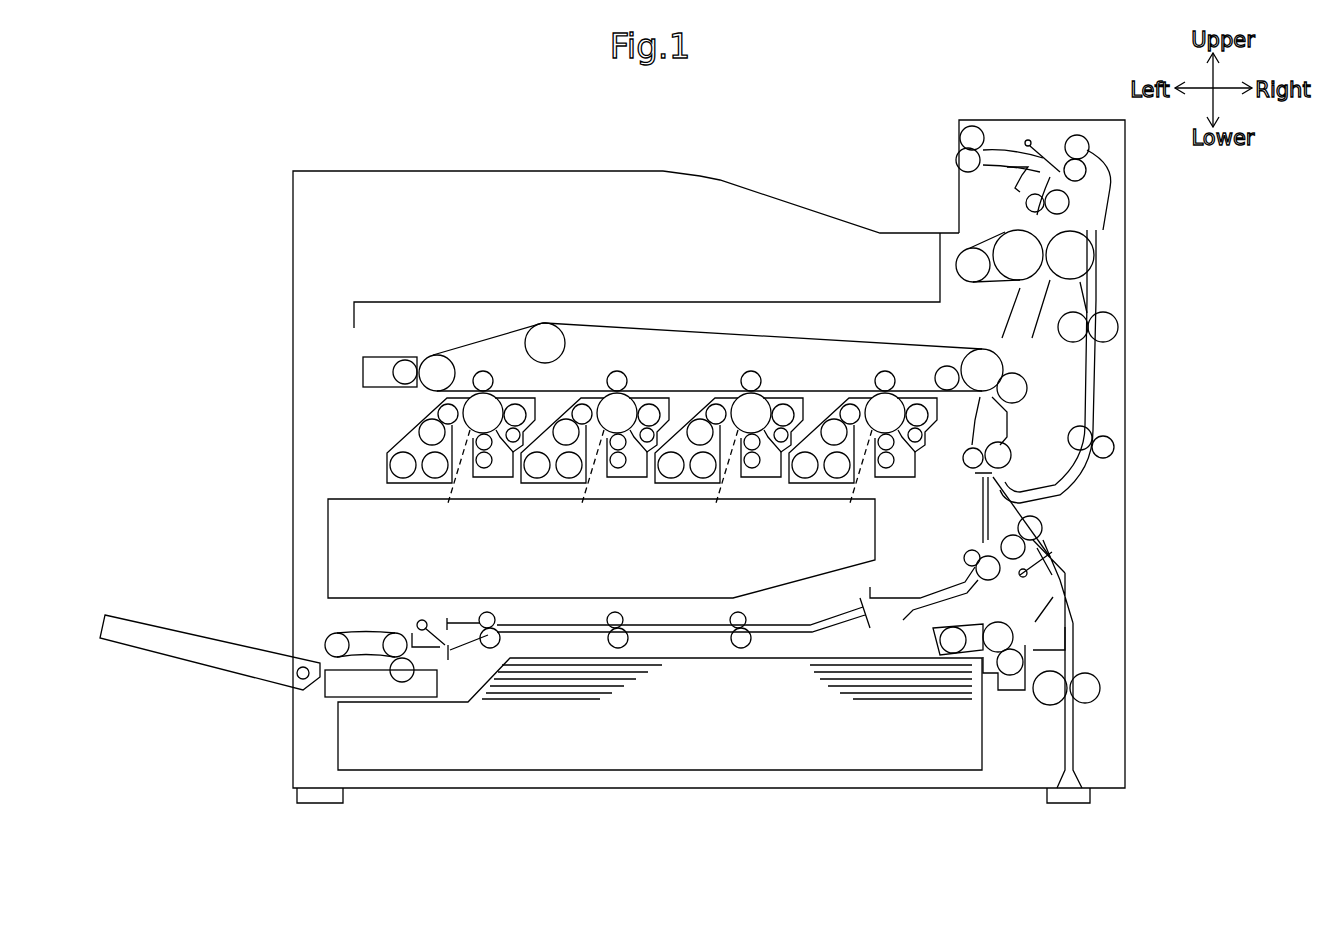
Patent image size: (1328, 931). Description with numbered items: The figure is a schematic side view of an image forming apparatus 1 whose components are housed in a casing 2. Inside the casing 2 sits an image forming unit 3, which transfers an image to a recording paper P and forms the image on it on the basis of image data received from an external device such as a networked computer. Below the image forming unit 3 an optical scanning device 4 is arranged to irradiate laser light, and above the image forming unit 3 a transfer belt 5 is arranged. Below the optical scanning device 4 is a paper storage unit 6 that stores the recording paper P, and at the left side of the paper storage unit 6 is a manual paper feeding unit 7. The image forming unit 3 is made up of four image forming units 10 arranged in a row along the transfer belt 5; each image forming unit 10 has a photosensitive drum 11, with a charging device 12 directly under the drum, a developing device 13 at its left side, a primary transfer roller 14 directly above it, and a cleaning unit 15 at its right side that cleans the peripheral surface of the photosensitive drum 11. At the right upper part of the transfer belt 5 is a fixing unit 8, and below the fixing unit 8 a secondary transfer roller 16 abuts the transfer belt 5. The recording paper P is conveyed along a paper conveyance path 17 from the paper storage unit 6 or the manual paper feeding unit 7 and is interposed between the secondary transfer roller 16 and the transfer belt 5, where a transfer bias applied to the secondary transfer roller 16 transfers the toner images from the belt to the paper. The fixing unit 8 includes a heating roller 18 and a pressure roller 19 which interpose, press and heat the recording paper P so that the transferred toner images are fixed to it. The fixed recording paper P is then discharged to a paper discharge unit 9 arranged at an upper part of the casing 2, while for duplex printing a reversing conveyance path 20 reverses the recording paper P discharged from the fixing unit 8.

The image forming apparatus 1 is at (651, 126).
The casing 2 is at (363, 171).
The image forming unit 3 is at (377, 427).
The optical scanning device 4 is at (328, 542).
The transfer belt 5 is at (698, 328).
The paper storage unit 6 is at (790, 770).
The manual paper feeding unit 7 is at (167, 629).
The fixing unit 8 is at (1100, 245).
The paper discharge unit 9 is at (792, 200).
The image forming units 10 is at (502, 378).
The photosensitive drum 11 is at (467, 432).
The charging device 12 is at (483, 470).
The developing device 13 is at (422, 486).
The primary transfer roller 14 is at (483, 371).
The cleaning unit 15 is at (540, 408).
The secondary transfer roller 16 is at (1027, 385).
The paper conveyance path 17 is at (1057, 557).
The heating roller 18 is at (1003, 238).
The pressure roller 19 is at (1097, 258).
The reversing conveyance path 20 is at (1103, 373).
The recording paper P is at (556, 682).